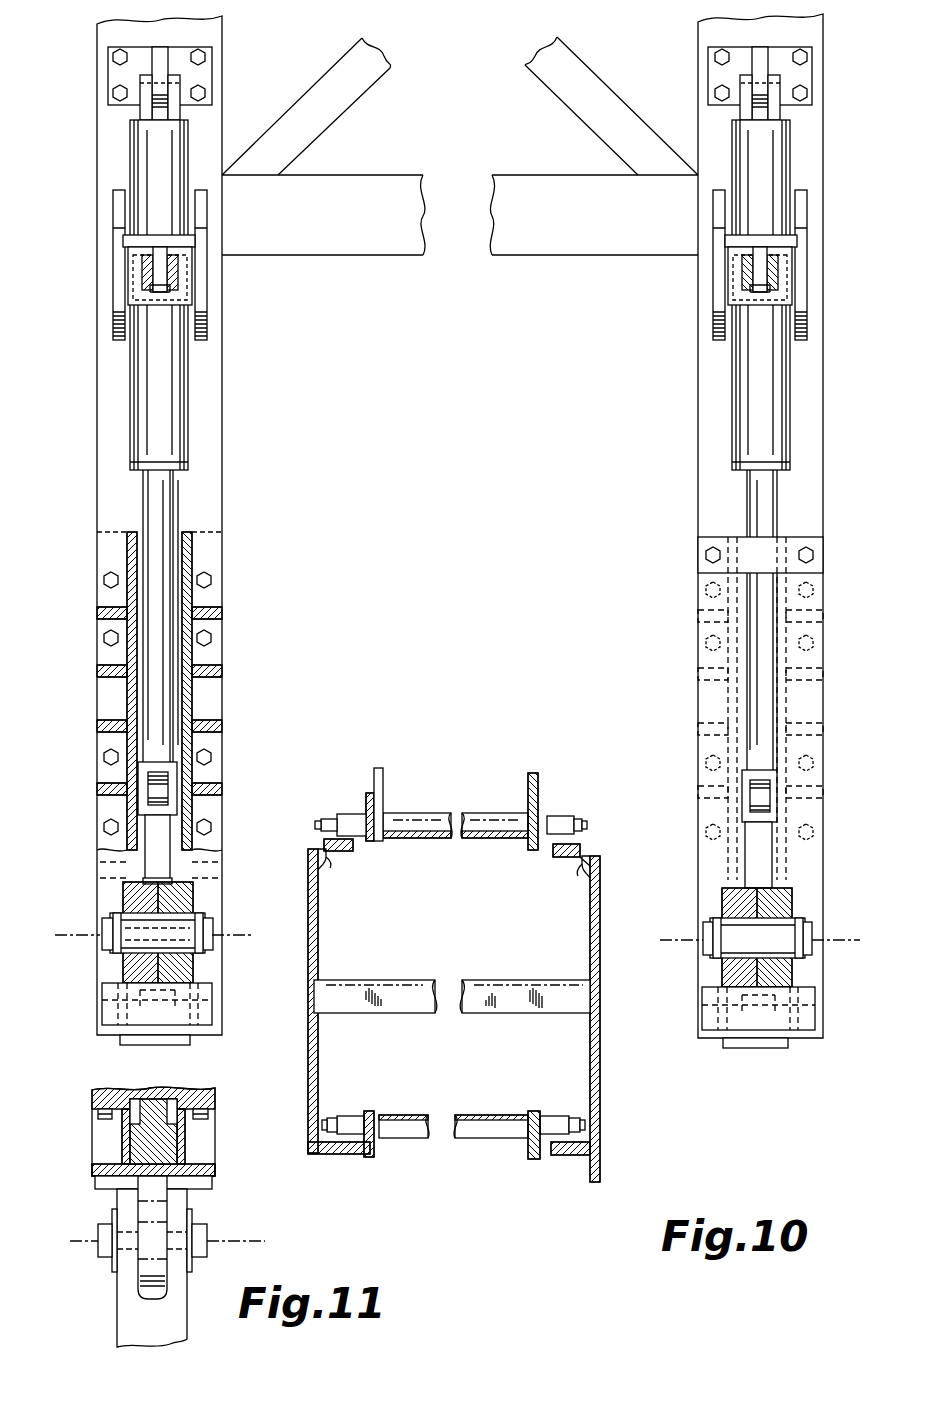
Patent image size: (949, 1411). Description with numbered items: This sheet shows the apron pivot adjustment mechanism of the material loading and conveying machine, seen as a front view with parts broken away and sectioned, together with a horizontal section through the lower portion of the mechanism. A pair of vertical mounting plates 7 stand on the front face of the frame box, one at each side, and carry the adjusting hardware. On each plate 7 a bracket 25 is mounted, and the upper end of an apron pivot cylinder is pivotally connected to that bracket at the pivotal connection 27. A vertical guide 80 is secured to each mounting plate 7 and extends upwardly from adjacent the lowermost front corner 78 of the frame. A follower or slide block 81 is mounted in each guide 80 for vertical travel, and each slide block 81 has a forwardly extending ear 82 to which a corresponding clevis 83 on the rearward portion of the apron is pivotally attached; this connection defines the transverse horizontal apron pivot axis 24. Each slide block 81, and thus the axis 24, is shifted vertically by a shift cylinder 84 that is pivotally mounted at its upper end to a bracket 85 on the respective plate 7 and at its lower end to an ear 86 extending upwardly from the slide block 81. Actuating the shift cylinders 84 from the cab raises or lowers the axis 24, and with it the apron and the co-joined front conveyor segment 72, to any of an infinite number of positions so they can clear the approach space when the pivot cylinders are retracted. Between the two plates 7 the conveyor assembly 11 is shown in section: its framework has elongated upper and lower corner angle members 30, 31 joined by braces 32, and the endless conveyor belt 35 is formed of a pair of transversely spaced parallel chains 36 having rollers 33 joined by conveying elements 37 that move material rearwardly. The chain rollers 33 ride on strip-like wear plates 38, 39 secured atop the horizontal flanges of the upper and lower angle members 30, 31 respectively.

In FIG. 10, the mounting plate 7 is at (223, 392).
In FIG. 11, the mounting plate 7 is at (188, 1100).
In FIG. 10, the conveyor assembly 11 is at (549, 731).
In FIG. 10, the apron pivot axis 24 is at (240, 940).
In FIG. 11, the apron pivot axis 24 is at (240, 1242).
In FIG. 10, the bracket 25 is at (208, 322).
In FIG. 10, the pivotal connection 27 is at (180, 272).
In FIG. 10, the upper corner angle member 30 is at (320, 856).
In FIG. 10, the lower corner angle member 31 is at (317, 1146).
In FIG. 10, the brace 32 is at (310, 936).
In FIG. 10, the chain roller 33 is at (340, 810).
In FIG. 10, the endless conveyor belt 35 is at (346, 790).
In FIG. 10, the chain 36 is at (316, 814).
In FIG. 10, the conveying element 37 is at (483, 806).
In FIG. 10, the wear plate 38 is at (345, 838).
In FIG. 10, the wear plate 39 is at (344, 1134).
In FIG. 10, the front conveyor segment 72 is at (424, 795).
In FIG. 10, the lowermost front corner 78 is at (137, 1043).
In FIG. 10, the vertical guide 80 is at (193, 630).
In FIG. 11, the vertical guide 80 is at (125, 1135).
In FIG. 10, the slide block 81 is at (148, 842).
In FIG. 11, the slide block 81 is at (147, 1112).
In FIG. 10, the ear 82 is at (127, 970).
In FIG. 11, the ear 82 is at (155, 1200).
In FIG. 11, the clevis 83 is at (127, 1273).
In FIG. 10, the shift cylinder 84 is at (170, 373).
In FIG. 10, the bracket 85 is at (162, 67).
In FIG. 10, the ear 86 is at (158, 787).